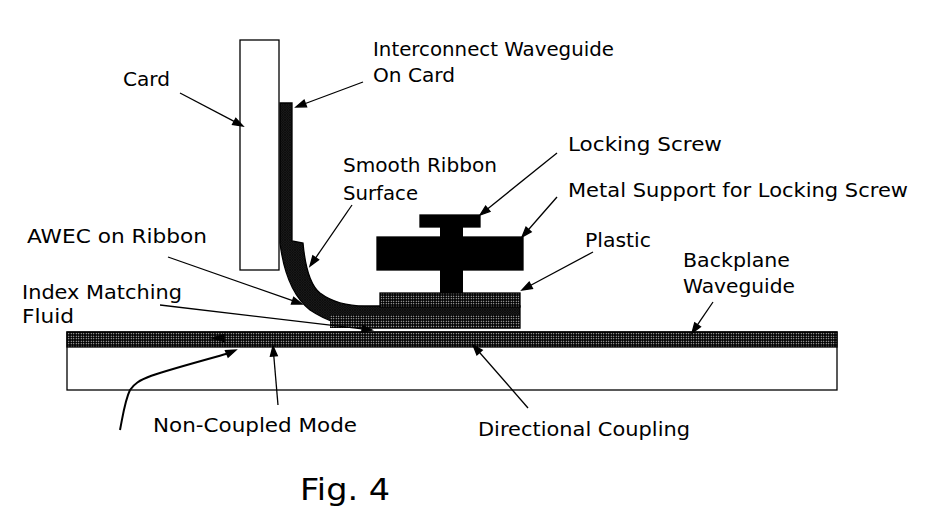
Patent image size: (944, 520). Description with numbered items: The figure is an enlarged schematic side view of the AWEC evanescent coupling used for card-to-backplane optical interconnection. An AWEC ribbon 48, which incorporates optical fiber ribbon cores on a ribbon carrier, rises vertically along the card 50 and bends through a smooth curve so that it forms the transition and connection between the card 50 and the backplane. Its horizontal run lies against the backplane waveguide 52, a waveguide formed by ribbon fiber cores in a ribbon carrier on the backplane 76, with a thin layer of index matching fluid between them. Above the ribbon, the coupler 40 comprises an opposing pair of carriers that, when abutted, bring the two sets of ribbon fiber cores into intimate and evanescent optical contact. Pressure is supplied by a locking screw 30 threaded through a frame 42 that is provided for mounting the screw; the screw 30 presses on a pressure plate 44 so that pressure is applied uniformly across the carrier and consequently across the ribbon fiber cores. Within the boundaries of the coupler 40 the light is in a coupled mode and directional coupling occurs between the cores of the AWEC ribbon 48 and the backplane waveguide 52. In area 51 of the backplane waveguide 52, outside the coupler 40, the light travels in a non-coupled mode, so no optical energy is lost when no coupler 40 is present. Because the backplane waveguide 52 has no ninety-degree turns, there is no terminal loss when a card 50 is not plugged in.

The card 50 is at (263, 57).
The AWEC ribbon 48 is at (289, 168).
The locking screw 30 is at (433, 215).
The frame 42 is at (497, 235).
The coupler 40 is at (498, 251).
The pressure plate 44 is at (522, 298).
The backplane waveguide 52 is at (798, 333).
The backplane 76 is at (474, 362).
The area 51 is at (165, 405).